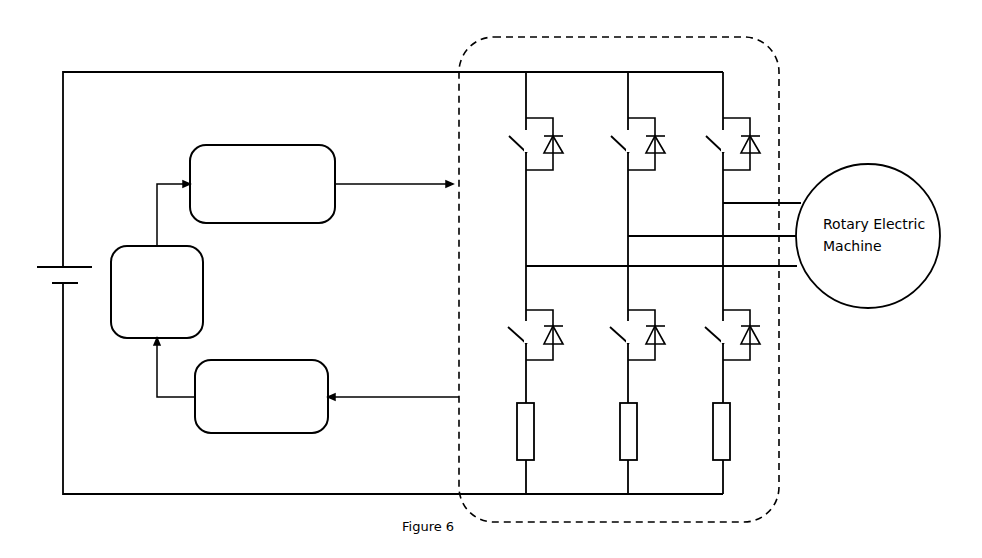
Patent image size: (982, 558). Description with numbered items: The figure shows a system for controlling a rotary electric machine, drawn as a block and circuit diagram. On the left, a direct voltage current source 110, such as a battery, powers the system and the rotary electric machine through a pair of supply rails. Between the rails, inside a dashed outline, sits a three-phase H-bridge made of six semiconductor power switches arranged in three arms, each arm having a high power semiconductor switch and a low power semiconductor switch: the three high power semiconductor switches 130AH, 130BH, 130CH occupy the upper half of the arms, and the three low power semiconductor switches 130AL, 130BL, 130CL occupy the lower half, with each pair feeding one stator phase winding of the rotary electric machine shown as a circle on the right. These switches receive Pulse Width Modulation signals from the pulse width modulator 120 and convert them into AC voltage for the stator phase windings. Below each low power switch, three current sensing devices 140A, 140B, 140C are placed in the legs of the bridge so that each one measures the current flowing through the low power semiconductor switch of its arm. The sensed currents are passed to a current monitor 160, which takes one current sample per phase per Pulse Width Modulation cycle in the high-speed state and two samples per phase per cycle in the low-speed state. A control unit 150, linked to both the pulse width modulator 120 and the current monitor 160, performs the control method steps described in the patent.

The direct voltage current source 110 is at (50, 258).
The pulse width modulator 120 is at (262, 184).
The control unit 150 is at (157, 292).
The current monitor 160 is at (261, 396).
The high power semiconductor switch 130AH is at (511, 131).
The high power semiconductor switch 130BH is at (637, 104).
The high power semiconductor switch 130CH is at (735, 114).
The low power semiconductor switch 130AL is at (512, 340).
The low power semiconductor switch 130BL is at (617, 345).
The low power semiconductor switch 130CL is at (712, 345).
The current sensing device 140A is at (535, 432).
The current sensing device 140B is at (638, 432).
The current sensing device 140C is at (731, 432).